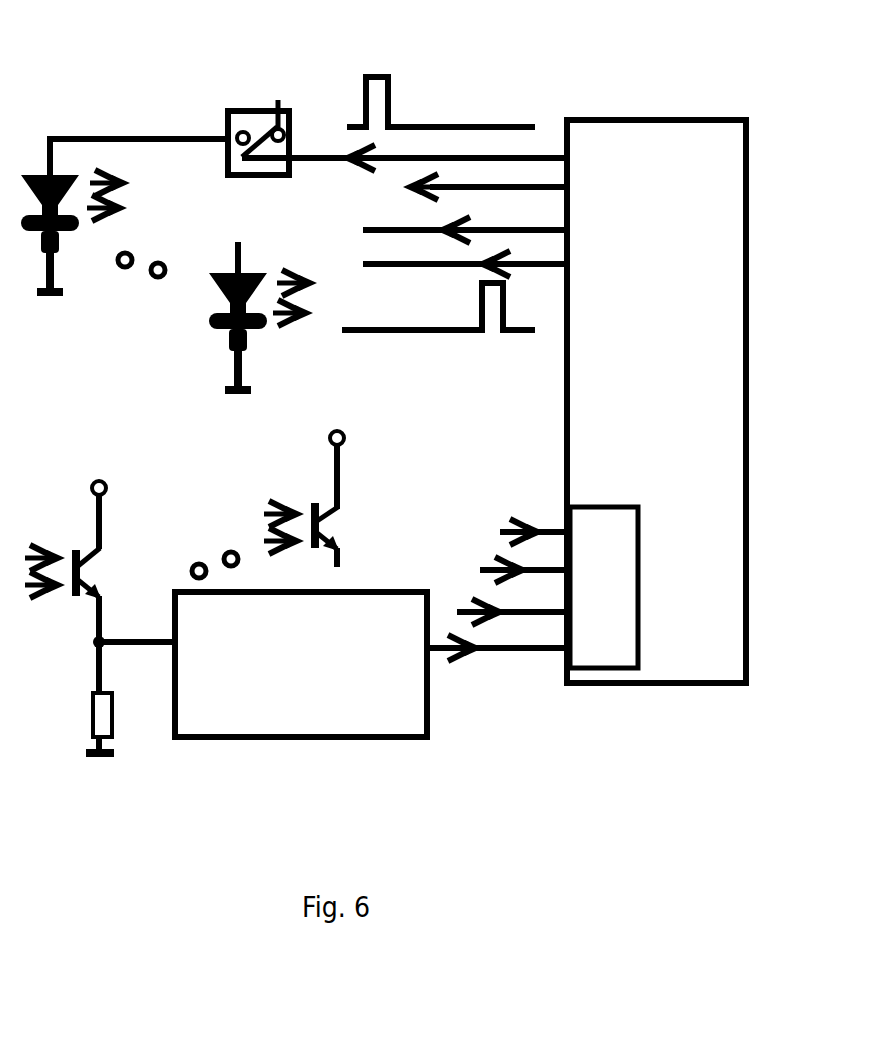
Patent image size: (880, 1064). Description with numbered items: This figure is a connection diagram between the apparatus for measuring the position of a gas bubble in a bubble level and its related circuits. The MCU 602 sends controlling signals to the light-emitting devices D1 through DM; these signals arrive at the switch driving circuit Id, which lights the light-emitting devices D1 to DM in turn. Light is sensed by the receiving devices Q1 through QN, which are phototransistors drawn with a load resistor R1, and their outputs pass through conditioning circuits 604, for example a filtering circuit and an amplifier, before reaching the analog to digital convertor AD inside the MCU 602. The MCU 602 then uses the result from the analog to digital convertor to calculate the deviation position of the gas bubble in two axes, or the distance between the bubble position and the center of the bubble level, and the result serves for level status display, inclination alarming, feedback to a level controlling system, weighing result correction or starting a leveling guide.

The MCU 602 is at (648, 117).
The conditioning circuits 604 is at (377, 742).
The light-emitting device D1 is at (124, 194).
The light-emitting device DM is at (232, 316).
The switch driving circuit Id is at (273, 118).
The receiving device Q1 is at (86, 562).
The receiving device QN is at (328, 498).
The load resistor R1 is at (81, 697).